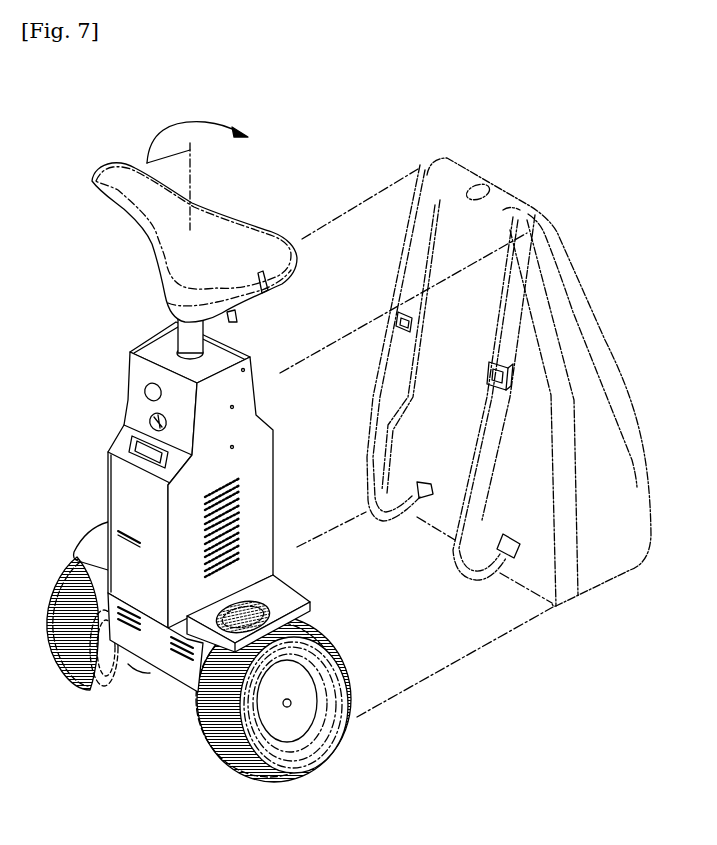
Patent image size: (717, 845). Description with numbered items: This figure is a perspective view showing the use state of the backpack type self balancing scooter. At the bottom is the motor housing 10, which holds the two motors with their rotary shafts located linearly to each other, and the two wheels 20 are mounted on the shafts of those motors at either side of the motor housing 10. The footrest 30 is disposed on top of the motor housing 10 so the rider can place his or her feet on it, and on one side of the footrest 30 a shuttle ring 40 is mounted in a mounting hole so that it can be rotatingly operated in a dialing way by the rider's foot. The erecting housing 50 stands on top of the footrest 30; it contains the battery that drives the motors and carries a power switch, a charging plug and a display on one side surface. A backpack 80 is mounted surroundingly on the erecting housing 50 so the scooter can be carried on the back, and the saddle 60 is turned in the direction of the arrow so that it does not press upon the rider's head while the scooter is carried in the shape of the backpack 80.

The motor housing 10 is at (189, 687).
The wheel 20 is at (96, 684).
The footrest 30 is at (284, 590).
The shuttle ring 40 is at (271, 615).
The erecting housing 50 is at (275, 481).
The saddle 60 is at (231, 226).
The backpack 80 is at (510, 197).